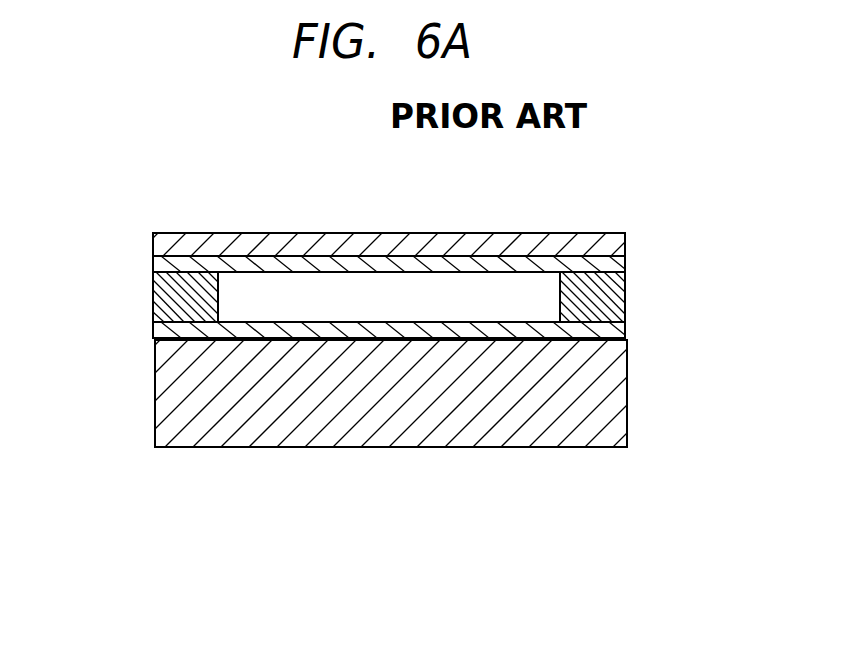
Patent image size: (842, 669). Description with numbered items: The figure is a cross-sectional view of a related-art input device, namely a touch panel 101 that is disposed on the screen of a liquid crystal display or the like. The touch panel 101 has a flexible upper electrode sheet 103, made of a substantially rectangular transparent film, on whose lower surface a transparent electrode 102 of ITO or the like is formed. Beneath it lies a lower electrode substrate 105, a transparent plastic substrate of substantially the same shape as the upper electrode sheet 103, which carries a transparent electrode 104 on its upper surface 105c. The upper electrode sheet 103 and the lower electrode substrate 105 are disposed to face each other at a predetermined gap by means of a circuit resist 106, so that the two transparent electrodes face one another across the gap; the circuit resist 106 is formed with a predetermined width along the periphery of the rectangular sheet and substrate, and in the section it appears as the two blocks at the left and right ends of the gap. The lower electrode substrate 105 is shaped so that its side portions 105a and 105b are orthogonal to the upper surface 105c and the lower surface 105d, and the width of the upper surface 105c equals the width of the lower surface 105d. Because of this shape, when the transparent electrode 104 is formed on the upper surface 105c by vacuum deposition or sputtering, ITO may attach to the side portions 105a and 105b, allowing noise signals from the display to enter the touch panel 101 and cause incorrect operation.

The touch panel 101 is at (251, 170).
The transparent electrode 102 is at (625, 262).
The upper electrode sheet 103 is at (547, 233).
The transparent electrode 104 is at (625, 335).
The lower electrode substrate 105 is at (520, 428).
The side portion 105a is at (628, 427).
The side portion 105b is at (155, 387).
The upper surface 105c is at (605, 343).
The lower surface 105d is at (340, 447).
The circuit resist 106 is at (218, 295).